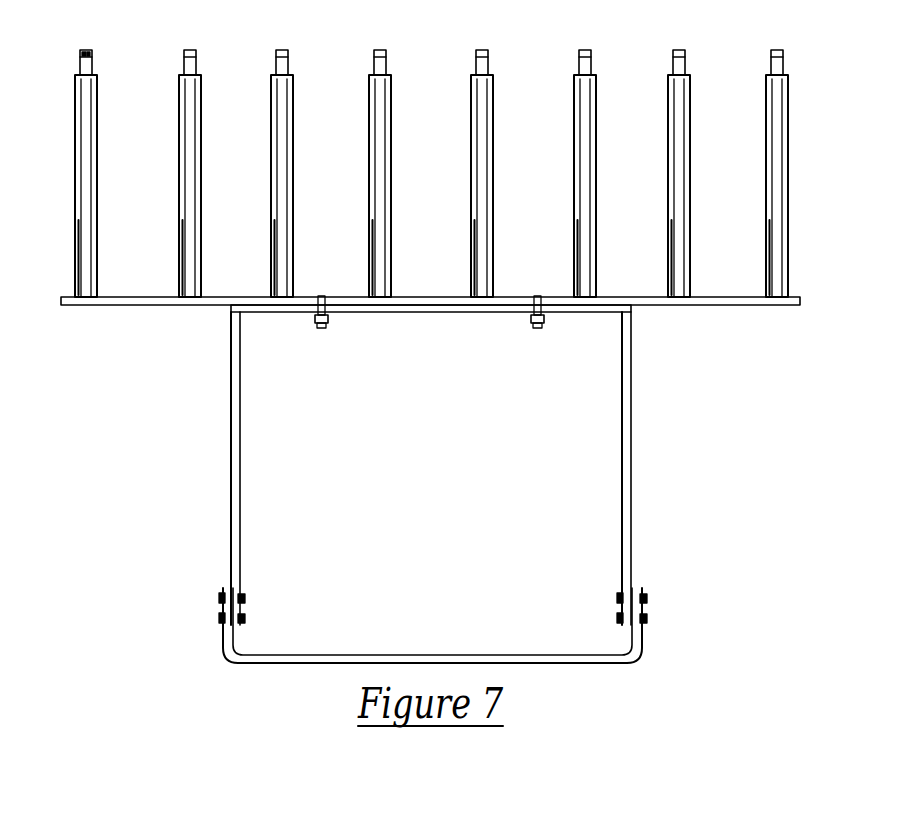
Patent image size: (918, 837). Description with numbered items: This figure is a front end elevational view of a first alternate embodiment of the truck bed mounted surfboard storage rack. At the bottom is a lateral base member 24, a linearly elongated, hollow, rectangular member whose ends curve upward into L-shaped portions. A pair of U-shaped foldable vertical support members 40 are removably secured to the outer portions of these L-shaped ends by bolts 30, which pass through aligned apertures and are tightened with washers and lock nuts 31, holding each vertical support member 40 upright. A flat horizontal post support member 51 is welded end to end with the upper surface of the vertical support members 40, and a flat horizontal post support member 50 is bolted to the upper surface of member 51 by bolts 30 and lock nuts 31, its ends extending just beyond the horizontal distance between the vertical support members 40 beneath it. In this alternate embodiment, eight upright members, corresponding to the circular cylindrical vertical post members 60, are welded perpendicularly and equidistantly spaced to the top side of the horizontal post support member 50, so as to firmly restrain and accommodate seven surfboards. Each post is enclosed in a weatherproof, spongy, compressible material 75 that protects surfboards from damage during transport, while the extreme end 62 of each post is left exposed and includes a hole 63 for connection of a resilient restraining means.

The lateral base member 24 is at (272, 657).
The bolts 30 is at (322, 328).
The lock nut 31 is at (317, 318).
The vertical support member 40 is at (231, 462).
The horizontal post support member 50 is at (61, 297).
The horizontal post support member 51 is at (231, 312).
The vertical post member 60 is at (80, 63).
The extreme end 62 is at (82, 50).
The hole 63 is at (92, 50).
The spongy, compressible material 75 is at (85, 147).